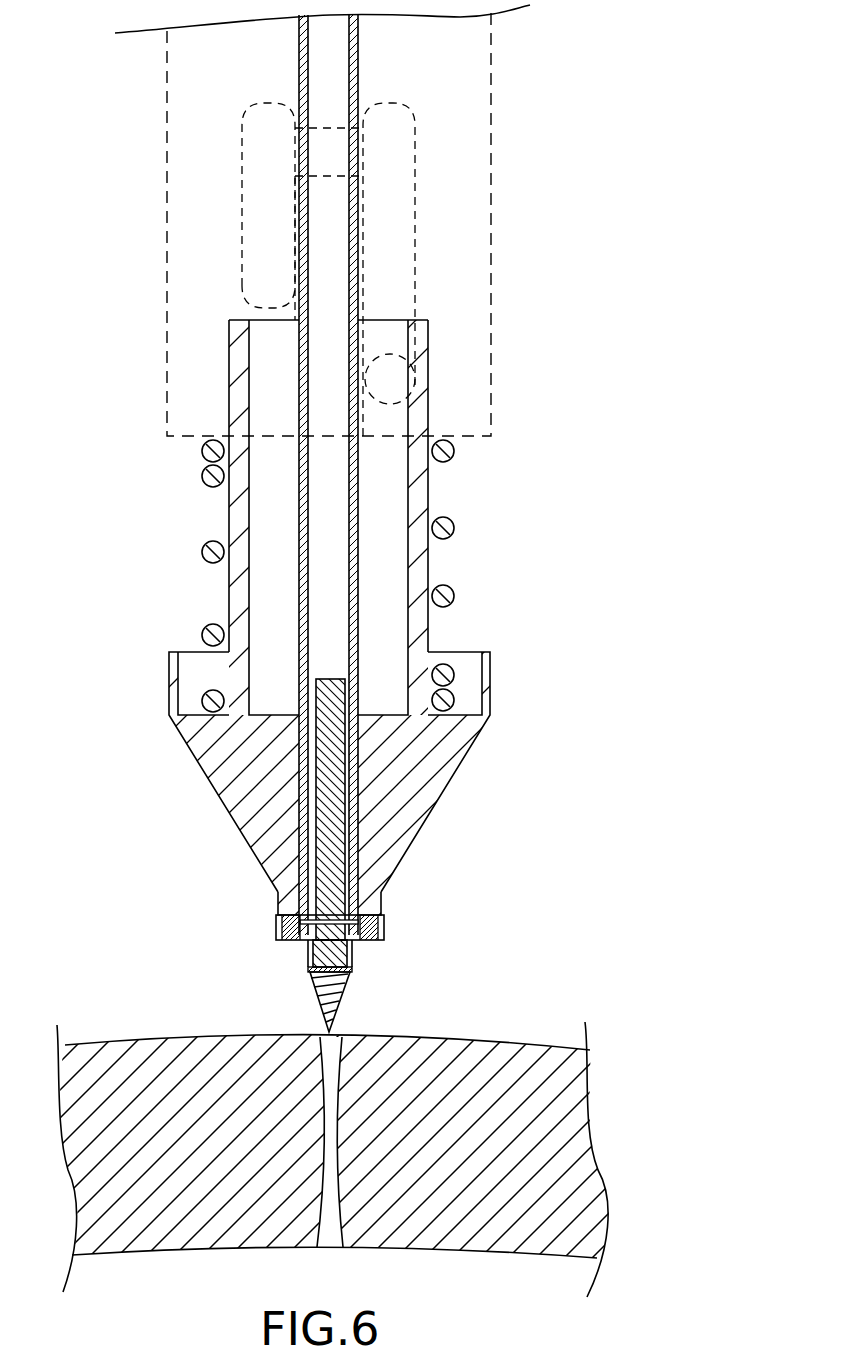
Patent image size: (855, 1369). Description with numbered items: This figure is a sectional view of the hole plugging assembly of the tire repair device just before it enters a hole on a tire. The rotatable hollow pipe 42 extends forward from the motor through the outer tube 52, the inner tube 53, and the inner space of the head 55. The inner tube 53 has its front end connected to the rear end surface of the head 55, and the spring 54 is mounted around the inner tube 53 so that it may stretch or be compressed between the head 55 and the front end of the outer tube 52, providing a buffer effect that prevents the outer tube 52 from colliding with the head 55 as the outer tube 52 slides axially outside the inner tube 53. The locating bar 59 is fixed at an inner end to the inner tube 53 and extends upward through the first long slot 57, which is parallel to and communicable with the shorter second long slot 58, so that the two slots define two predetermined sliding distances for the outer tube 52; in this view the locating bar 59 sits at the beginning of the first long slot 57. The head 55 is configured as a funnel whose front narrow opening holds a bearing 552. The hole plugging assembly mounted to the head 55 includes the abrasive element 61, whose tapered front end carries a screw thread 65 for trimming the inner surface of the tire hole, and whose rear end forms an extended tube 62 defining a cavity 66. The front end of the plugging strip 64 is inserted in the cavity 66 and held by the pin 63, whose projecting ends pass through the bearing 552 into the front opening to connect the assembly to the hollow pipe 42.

The hollow pipe 42 is at (330, 630).
The outer tube 52 is at (467, 87).
The inner tube 53 is at (269, 526).
The spring 54 is at (453, 592).
The head 55 is at (425, 797).
The bearing 552 is at (378, 920).
The first long slot 57 is at (392, 193).
The second long slot 58 is at (252, 160).
The locating bar 59 is at (395, 379).
The abrasive element 61 is at (337, 1015).
The extended tube 62 is at (350, 957).
The pin 63 is at (312, 922).
The plugging strip 64 is at (327, 800).
The screw thread 65 is at (322, 1002).
The cavity 66 is at (308, 958).